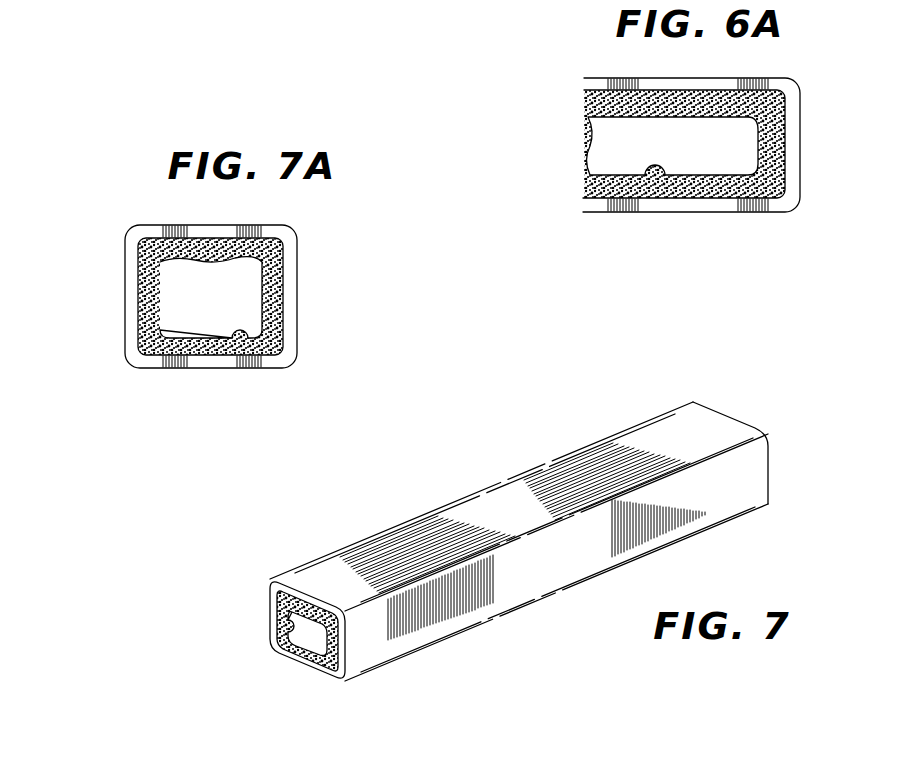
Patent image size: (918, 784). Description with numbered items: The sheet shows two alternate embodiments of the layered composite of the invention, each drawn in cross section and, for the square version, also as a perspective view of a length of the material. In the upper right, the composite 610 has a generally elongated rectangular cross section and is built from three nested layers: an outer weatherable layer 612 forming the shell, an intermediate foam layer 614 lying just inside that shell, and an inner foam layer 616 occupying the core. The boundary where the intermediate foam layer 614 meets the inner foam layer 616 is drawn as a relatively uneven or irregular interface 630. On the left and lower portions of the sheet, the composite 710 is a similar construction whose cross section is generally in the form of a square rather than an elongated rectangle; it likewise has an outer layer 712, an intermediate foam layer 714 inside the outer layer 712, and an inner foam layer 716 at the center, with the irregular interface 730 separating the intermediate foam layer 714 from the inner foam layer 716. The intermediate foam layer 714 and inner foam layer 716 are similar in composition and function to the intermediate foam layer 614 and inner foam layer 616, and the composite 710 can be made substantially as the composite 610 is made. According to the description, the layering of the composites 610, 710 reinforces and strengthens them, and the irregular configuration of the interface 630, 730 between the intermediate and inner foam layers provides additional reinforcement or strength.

In FIG. 6A, the composite 610 is at (647, 188).
In FIG. 6A, the outer weatherable layer 612 is at (602, 213).
In FIG. 6A, the intermediate foam layer 614 is at (587, 192).
In FIG. 6A, the inner foam layer 616 is at (594, 130).
In FIG. 6A, the interface 630 is at (668, 174).
In FIG. 7A, the composite 710 is at (163, 298).
In FIG. 7, the composite 710 is at (462, 551).
In FIG. 7A, the outer layer 712 is at (180, 370).
In FIG. 7, the outer layer 712 is at (393, 635).
In FIG. 7A, the intermediate foam layer 714 is at (144, 349).
In FIG. 7, the intermediate foam layer 714 is at (302, 605).
In FIG. 7A, the inner foam layer 716 is at (193, 283).
In FIG. 7, the inner foam layer 716 is at (303, 643).
In FIG. 7A, the interface 730 is at (249, 338).
In FIG. 7, the interface 730 is at (280, 632).